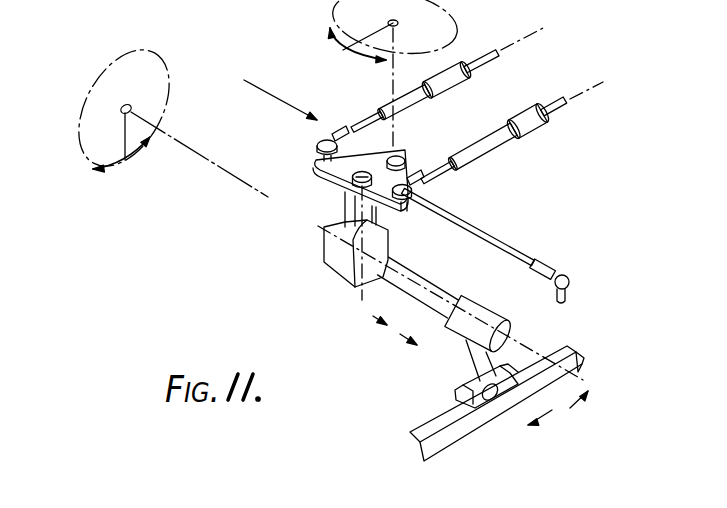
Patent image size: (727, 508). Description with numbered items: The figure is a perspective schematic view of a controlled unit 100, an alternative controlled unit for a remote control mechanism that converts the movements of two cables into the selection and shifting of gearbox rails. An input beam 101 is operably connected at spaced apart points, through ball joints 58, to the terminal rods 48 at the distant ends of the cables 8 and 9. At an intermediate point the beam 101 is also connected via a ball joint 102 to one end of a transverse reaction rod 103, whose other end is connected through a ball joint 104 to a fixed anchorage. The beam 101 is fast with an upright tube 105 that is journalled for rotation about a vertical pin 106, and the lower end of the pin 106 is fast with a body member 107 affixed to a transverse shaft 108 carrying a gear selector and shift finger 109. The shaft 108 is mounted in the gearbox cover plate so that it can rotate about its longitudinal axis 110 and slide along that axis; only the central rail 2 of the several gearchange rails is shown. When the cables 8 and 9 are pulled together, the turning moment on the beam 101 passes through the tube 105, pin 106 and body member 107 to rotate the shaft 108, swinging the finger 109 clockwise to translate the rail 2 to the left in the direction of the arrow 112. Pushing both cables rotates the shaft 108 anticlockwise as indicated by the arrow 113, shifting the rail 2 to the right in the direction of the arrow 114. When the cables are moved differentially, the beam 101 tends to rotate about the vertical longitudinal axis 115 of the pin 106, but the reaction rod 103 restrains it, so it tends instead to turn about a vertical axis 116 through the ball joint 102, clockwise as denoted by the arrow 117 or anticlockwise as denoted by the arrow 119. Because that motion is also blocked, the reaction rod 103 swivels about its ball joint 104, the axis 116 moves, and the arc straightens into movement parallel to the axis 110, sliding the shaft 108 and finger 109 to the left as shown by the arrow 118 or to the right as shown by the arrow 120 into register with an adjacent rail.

The central rail 2 is at (400, 441).
The cable 8 is at (500, 53).
The cable 9 is at (548, 110).
The terminal rod 48 is at (372, 130).
The ball joint 58 is at (316, 146).
The controlled unit 100 is at (265, 90).
The input beam 101 is at (340, 178).
The ball joint 102 is at (404, 157).
The transverse reaction rod 103 is at (497, 240).
The ball joint 104 is at (582, 263).
The upright tube 105 is at (352, 214).
The vertical pin 106 is at (342, 186).
The body member 107 is at (345, 258).
The transverse shaft 108 is at (398, 285).
The gear selector and shift finger 109 is at (472, 373).
The longitudinal axis 110 is at (210, 165).
The arrow 112 is at (547, 428).
The arrow 113 is at (142, 160).
The arrow 114 is at (572, 409).
The vertical longitudinal axis 115 is at (104, 178).
The vertical axis 116 is at (393, 85).
The arrow 117 is at (328, 33).
The arrow 118 is at (383, 330).
The arrow 119 is at (370, 60).
The arrow 120 is at (414, 348).